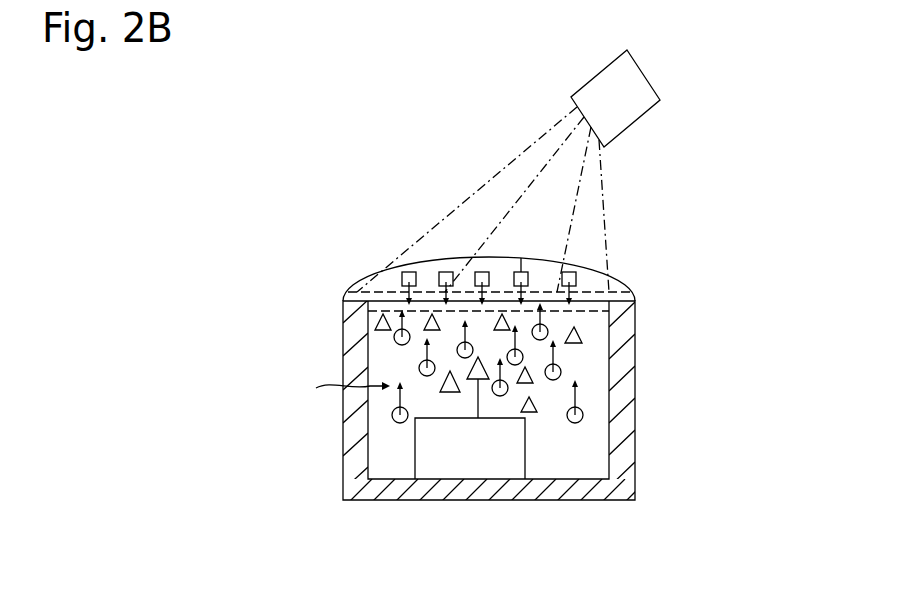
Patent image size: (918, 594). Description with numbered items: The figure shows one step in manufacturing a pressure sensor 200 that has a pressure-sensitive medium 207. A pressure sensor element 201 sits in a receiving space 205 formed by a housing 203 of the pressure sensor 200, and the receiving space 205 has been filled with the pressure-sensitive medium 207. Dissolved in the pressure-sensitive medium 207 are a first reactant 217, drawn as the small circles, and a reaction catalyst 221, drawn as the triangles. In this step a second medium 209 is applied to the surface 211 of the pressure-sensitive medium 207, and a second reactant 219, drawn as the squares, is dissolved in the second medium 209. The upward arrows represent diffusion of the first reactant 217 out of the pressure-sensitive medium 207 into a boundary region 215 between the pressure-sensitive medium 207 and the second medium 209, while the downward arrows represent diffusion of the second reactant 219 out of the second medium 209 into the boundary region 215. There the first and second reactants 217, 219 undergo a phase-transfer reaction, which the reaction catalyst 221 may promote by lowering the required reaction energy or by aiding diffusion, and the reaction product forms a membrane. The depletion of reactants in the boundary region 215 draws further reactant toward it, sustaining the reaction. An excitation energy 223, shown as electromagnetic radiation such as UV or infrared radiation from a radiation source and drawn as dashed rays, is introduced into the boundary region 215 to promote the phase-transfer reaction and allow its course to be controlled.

The pressure sensor 200 is at (318, 232).
The pressure sensor element 201 is at (497, 470).
The housing 203 is at (362, 461).
The receiving space 205 is at (333, 389).
The pressure-sensitive medium 207 is at (382, 356).
The second medium 209 is at (358, 285).
The surface 211 is at (376, 292).
The boundary region 215 is at (600, 290).
The first reactant 217 is at (394, 338).
The second reactant 219 is at (409, 272).
The reaction catalyst 221 is at (413, 298).
The excitation energy 223 is at (593, 97).